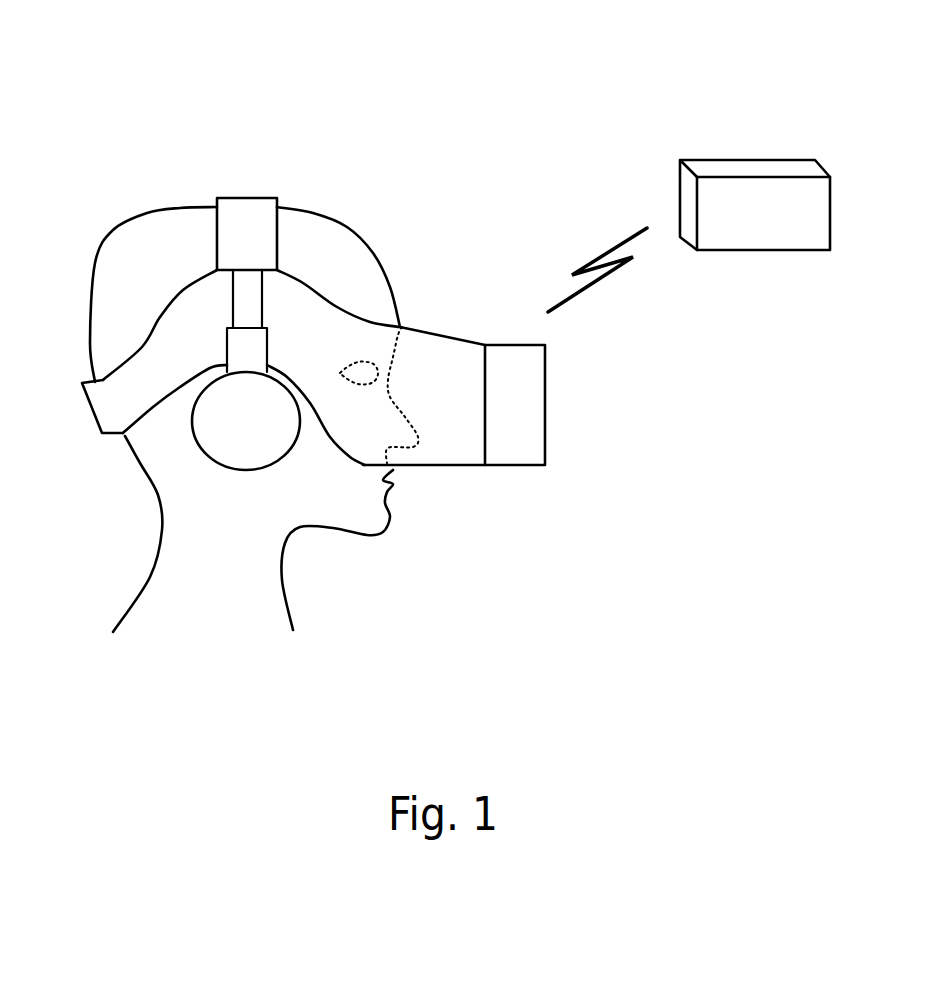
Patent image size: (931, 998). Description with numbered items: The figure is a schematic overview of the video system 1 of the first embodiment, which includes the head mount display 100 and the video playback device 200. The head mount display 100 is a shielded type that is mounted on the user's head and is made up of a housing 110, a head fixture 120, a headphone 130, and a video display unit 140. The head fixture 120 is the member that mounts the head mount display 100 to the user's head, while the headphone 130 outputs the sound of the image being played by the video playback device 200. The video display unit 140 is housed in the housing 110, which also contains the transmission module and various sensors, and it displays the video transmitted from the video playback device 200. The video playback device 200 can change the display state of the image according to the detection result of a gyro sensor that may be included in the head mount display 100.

The video system 1 is at (491, 70).
The head mount display 100 is at (478, 313).
The housing 110 is at (483, 466).
The head fixture 120 is at (93, 421).
The headphone 130 is at (247, 198).
The video display unit 140 is at (546, 348).
The video playback device 200 is at (680, 174).